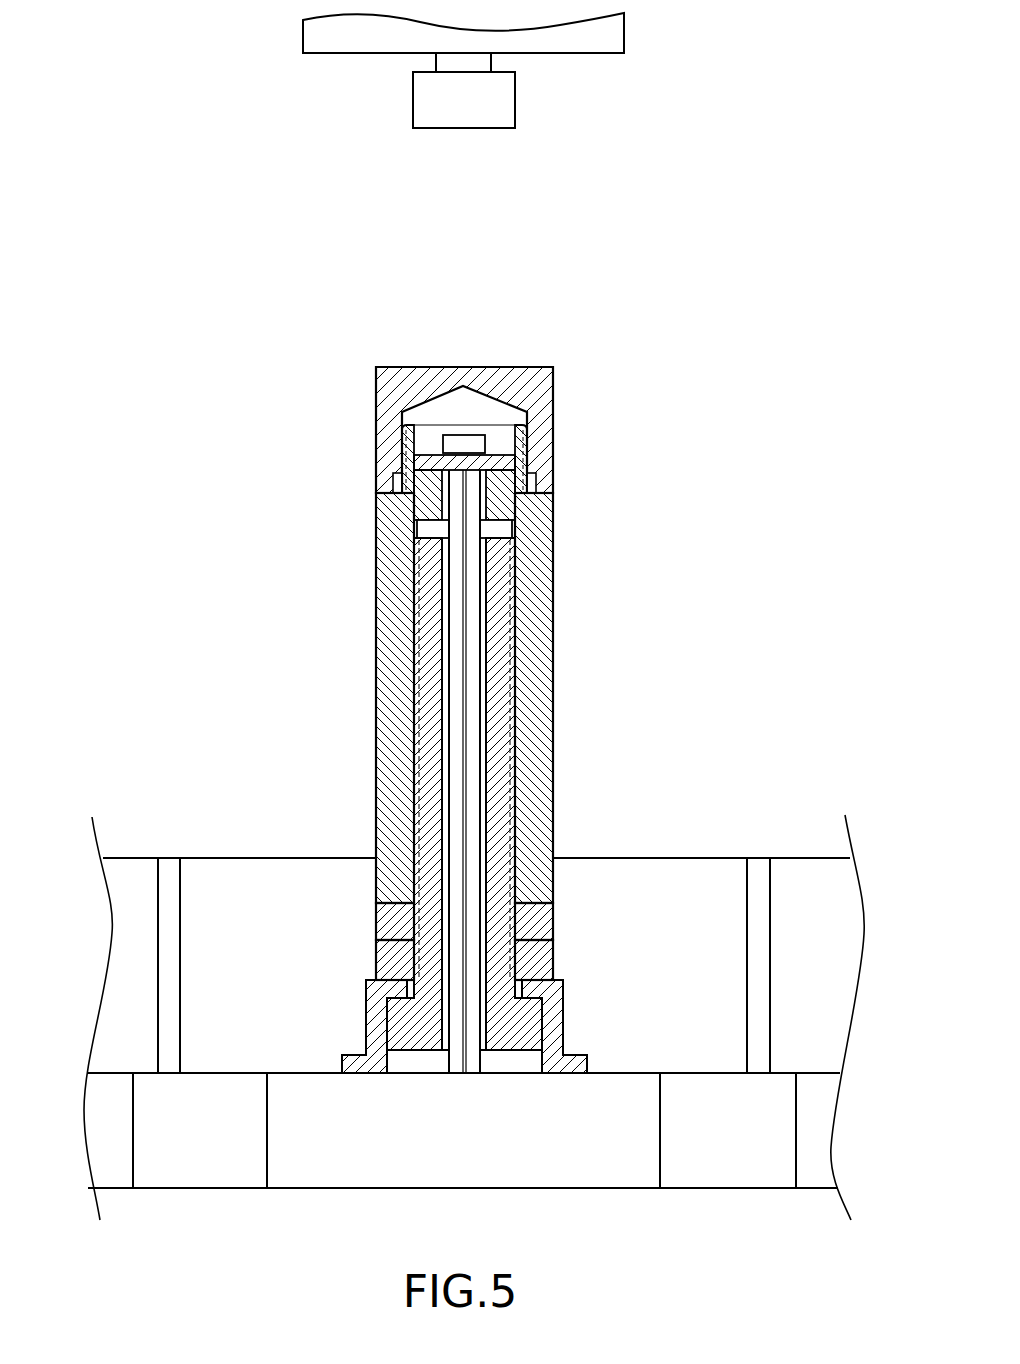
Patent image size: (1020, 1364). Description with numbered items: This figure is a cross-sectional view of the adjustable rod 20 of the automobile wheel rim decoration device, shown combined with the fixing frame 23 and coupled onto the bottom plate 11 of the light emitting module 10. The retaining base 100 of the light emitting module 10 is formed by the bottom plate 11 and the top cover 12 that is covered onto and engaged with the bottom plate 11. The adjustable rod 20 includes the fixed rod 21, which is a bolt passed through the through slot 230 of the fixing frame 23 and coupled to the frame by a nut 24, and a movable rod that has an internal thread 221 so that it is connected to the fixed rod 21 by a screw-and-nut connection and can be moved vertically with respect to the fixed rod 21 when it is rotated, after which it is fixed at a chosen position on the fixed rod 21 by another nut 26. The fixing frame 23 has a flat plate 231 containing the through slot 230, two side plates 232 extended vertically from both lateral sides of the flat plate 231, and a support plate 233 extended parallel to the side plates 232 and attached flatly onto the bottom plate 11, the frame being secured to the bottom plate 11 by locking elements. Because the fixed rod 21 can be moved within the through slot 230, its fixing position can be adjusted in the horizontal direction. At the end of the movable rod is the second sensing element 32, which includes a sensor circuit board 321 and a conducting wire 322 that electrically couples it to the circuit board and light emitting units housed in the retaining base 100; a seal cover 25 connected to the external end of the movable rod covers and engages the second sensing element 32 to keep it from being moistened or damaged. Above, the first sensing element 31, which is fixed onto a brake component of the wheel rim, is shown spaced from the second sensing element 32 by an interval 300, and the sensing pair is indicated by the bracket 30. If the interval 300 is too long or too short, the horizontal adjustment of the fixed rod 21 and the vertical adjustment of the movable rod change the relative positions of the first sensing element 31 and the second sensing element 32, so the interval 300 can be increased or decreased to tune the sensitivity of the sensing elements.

The light emitting module 10 is at (727, 854).
The bottom plate 11 is at (713, 1044).
The top cover 12 is at (608, 1145).
The retaining base 100 is at (612, 1257).
The adjustable rod 20 is at (559, 627).
The fixed rod 21 is at (510, 724).
The internal thread 221 is at (513, 530).
The fixing frame 23 is at (361, 1002).
The through slot 230 is at (407, 983).
The flat plate 231 is at (374, 967).
The side plate 232 is at (363, 1037).
The support plate 233 is at (338, 1067).
The nut 24 is at (548, 958).
The seal cover 25 is at (527, 372).
The nut 26 is at (548, 915).
The driving module 30 is at (347, 188).
The first sensing element 31 is at (425, 95).
The second sensing element 32 is at (461, 445).
The sensor circuit board 321 is at (430, 463).
The conducting wire 322 is at (458, 565).
The interval 300 is at (482, 207).